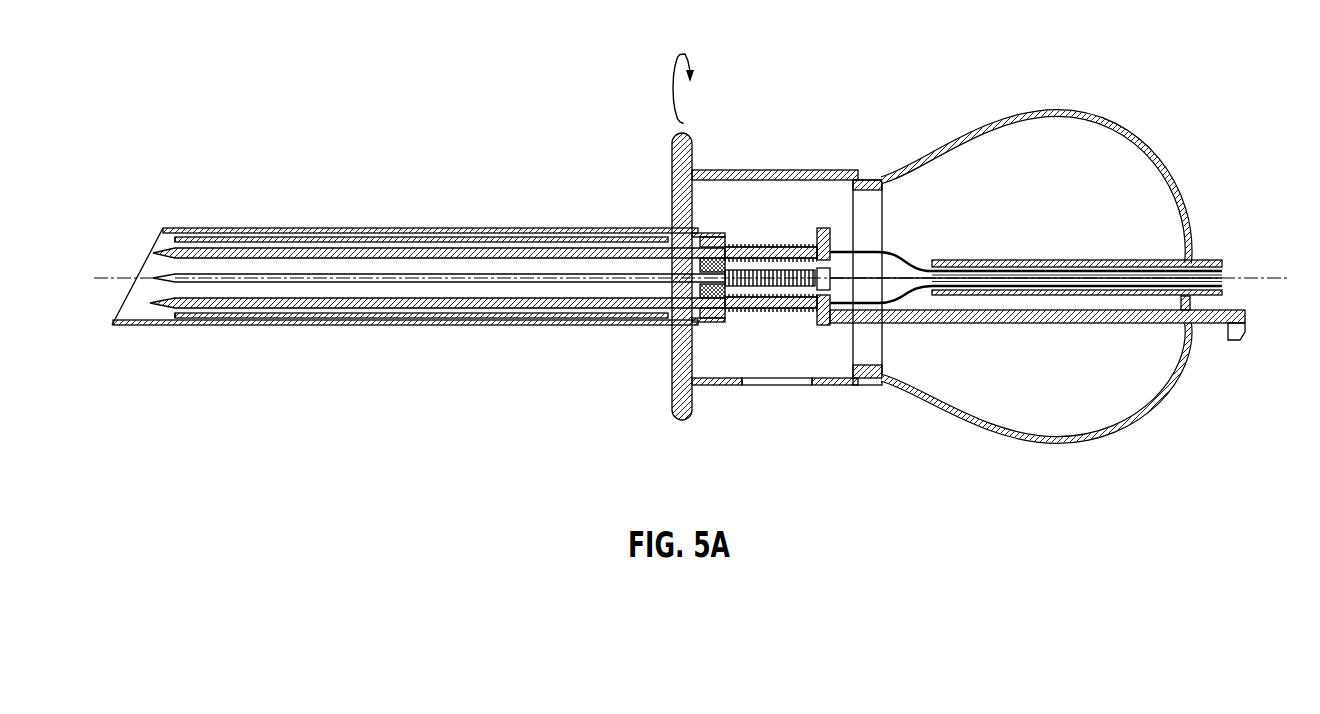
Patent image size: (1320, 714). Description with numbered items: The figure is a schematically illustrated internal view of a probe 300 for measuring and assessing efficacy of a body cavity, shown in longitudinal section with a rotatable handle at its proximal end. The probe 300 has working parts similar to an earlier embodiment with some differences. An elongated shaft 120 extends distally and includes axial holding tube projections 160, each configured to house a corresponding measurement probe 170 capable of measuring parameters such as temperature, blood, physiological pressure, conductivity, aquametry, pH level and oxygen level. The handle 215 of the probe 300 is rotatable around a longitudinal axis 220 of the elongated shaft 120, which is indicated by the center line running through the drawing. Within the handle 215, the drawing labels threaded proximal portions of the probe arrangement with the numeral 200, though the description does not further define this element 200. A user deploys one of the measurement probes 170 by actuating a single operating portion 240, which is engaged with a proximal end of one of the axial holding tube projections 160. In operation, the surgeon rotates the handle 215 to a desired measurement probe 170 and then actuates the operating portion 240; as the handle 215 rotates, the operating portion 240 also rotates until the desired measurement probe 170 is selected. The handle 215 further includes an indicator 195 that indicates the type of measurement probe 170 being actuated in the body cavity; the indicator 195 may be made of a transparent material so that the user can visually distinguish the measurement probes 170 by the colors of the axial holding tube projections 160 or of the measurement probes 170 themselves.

The probe 300 is at (440, 53).
The elongated shaft 120 is at (278, 228).
The axial holding tube projections 160 is at (488, 251).
The measurement probe 170 is at (334, 304).
The longitudinal axis 220 is at (111, 275).
The handle 215 is at (722, 171).
The threaded needle hubs 200 is at (787, 272).
The indicator 195 is at (778, 386).
The single operating portion 240 is at (1245, 338).